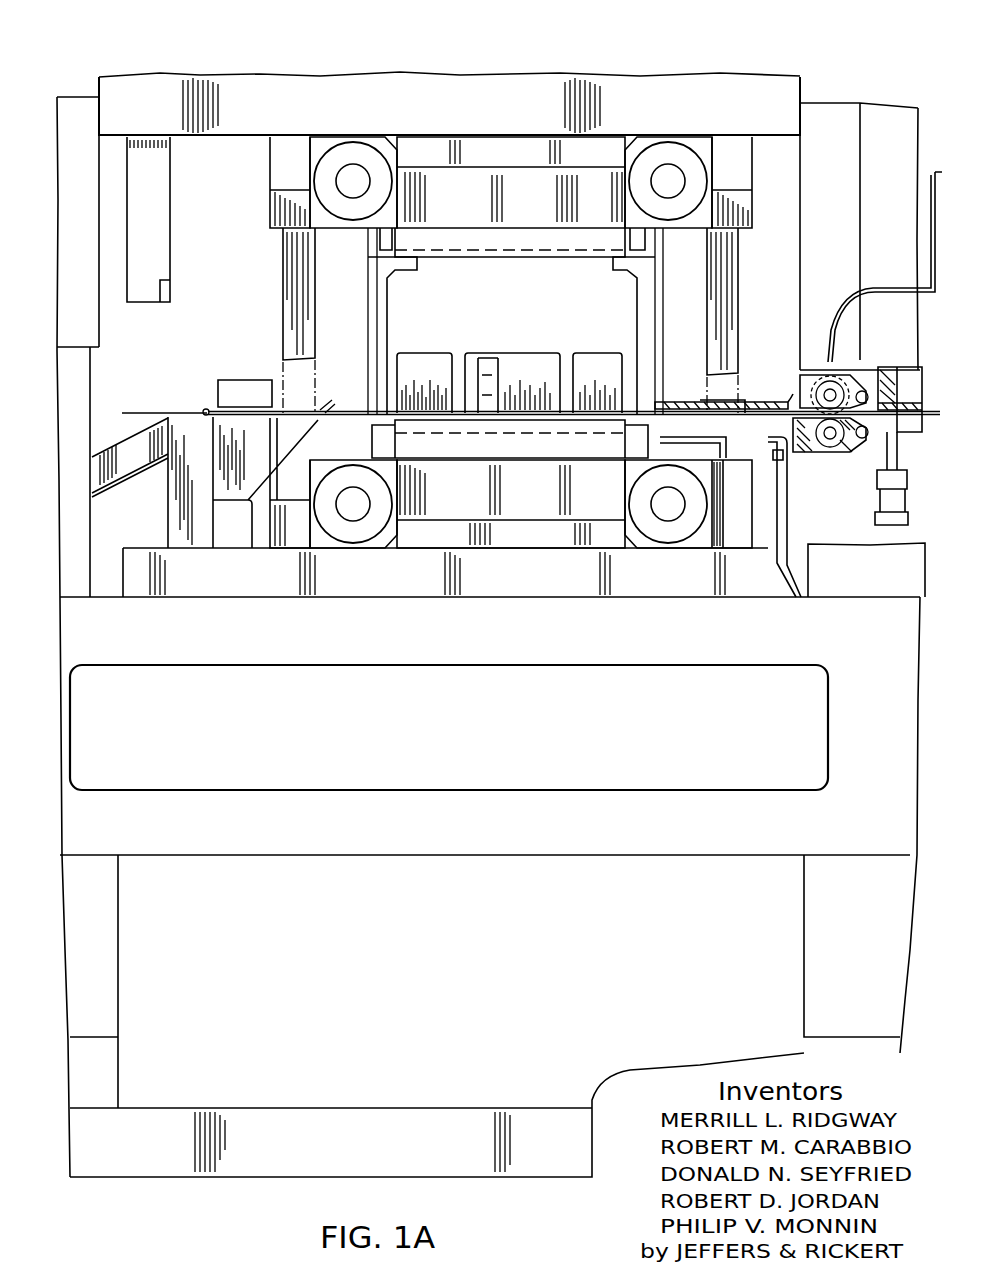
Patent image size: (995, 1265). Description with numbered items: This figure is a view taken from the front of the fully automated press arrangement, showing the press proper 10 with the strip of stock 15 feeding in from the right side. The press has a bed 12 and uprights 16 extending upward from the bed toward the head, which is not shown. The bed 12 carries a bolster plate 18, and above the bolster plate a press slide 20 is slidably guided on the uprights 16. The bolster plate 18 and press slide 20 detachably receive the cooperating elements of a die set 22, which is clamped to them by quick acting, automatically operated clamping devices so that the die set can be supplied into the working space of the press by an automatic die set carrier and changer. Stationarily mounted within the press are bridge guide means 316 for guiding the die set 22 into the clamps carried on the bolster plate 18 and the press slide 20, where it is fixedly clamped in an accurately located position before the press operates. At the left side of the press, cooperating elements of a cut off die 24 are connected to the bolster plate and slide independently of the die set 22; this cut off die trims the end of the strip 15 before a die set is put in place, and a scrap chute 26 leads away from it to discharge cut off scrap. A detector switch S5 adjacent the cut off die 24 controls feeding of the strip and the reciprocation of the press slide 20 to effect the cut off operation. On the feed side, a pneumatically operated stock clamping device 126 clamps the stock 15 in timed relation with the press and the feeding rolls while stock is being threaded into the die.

The press 10 is at (493, 80).
The bed 12 is at (452, 735).
The strip of stock 15 is at (646, 406).
The uprights 16 is at (77, 112).
The bolster plate 18 is at (553, 595).
The press slide 20 is at (323, 88).
The die set 22 is at (517, 445).
The cut off die 24 is at (158, 244).
The scrap chute 26 is at (122, 452).
The stock clamping device 126 is at (883, 458).
The bridge guide means 316 is at (385, 318).
The detector switch S5 is at (531, 374).